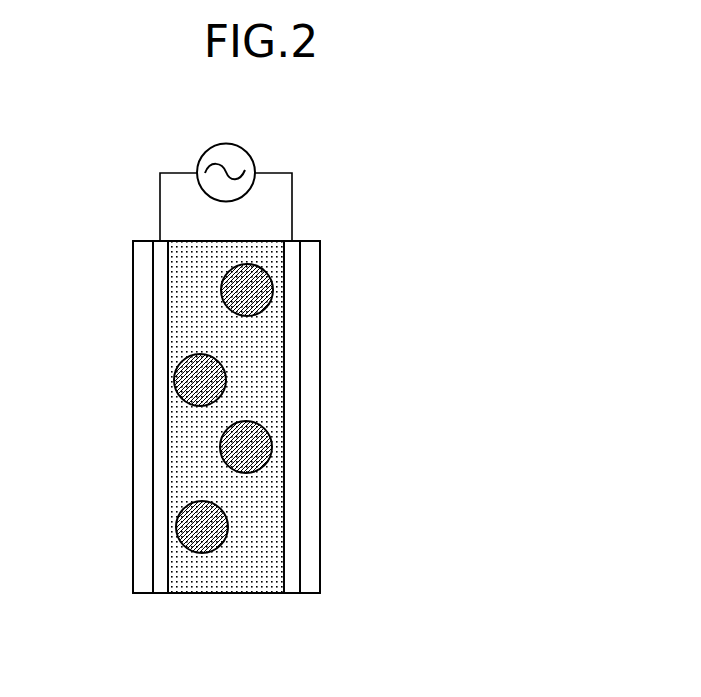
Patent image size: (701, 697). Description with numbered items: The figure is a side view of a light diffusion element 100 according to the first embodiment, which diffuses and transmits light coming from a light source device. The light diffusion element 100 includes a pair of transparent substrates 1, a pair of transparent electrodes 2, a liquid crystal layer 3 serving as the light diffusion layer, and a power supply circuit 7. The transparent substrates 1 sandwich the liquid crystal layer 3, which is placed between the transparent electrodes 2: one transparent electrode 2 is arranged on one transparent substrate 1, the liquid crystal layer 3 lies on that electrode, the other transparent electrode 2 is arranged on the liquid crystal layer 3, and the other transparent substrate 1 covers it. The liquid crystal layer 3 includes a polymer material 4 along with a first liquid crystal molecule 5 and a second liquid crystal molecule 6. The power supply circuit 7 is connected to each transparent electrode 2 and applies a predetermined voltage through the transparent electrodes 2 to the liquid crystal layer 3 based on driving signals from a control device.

The light diffusion element 100 is at (344, 138).
The transparent substrate 1 is at (143, 582).
The transparent electrode 2 is at (163, 582).
The liquid crystal layer 3 is at (168, 598).
The polymer material 4 is at (255, 545).
The first liquid crystal molecule 5 is at (265, 292).
The second liquid crystal molecule 6 is at (180, 525).
The power supply circuit 7 is at (226, 143).